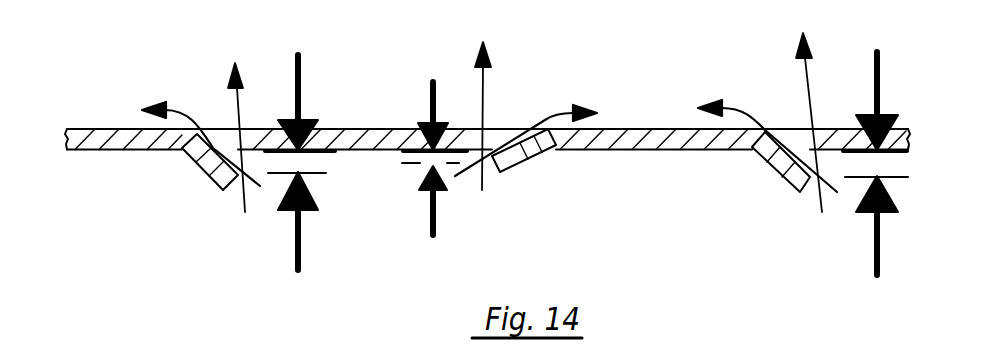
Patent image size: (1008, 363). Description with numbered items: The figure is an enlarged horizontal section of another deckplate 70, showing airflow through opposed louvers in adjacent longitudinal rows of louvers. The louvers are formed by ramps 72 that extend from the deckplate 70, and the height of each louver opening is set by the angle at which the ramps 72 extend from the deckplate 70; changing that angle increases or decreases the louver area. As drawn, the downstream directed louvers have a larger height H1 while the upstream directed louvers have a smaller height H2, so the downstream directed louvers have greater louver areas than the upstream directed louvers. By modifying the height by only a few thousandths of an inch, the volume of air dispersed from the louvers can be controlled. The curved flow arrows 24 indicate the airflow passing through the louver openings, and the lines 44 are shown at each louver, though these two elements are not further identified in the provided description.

The deckplate 70 is at (90, 129).
The ramps 72 is at (200, 170).
The air flow 24 is at (178, 108).
The louver line 44 is at (241, 99).
The height of downstream directed louvers H1 is at (908, 194).
The height of upstream directed louvers H2 is at (400, 161).